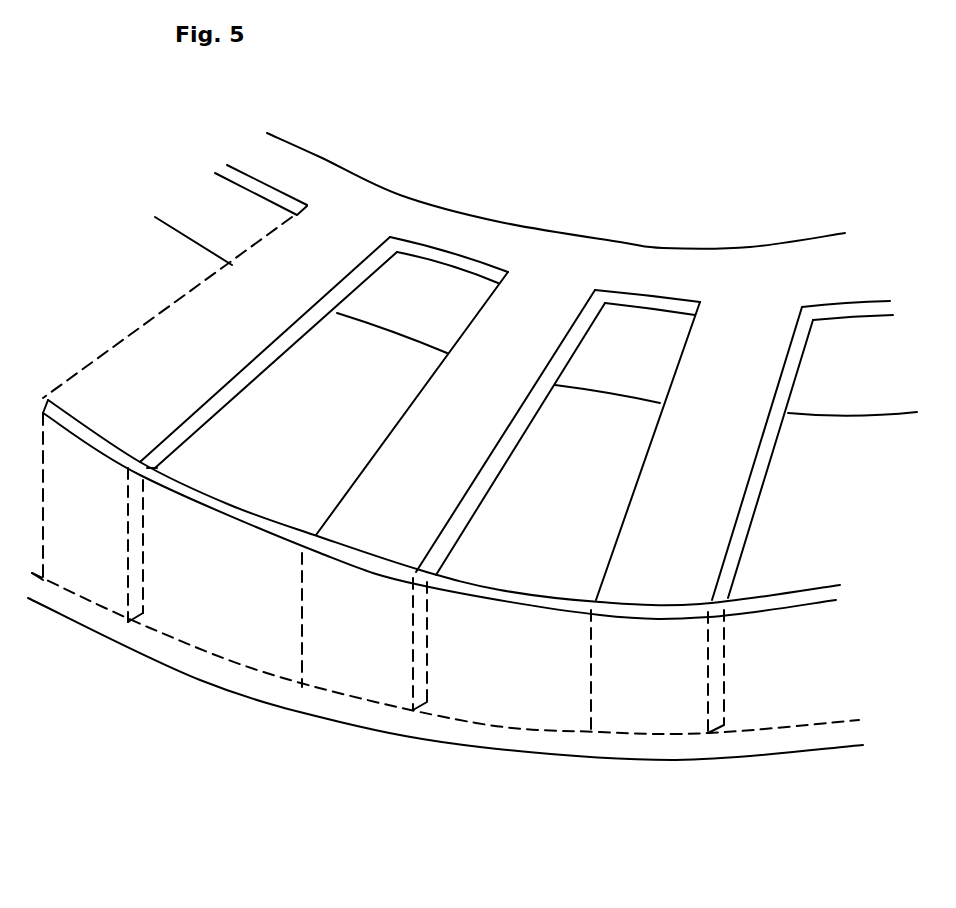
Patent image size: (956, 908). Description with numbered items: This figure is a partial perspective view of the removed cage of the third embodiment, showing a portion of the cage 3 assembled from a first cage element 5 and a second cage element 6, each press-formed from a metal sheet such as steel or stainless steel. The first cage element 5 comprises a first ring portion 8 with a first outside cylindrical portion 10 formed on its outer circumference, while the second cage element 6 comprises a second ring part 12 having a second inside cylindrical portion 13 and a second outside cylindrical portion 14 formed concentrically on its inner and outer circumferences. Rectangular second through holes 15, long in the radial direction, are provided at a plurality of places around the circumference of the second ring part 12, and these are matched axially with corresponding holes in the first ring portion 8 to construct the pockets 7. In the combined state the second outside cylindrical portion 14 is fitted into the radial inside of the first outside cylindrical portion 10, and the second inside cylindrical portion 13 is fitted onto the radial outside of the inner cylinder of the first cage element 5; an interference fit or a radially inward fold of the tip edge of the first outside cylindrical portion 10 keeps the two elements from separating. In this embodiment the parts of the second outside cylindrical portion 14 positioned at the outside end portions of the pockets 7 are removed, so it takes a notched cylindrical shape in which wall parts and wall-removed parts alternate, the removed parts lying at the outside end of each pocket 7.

The core body 3 is at (775, 237).
The first cage element 5 is at (609, 747).
The second cage element 6 is at (505, 328).
The pocket 7 is at (263, 358).
The first ring portion 8 is at (462, 680).
The first outside cylindrical portion 10 is at (511, 663).
The second ring part 12 is at (425, 463).
The second inside cylindrical portion 13 is at (620, 345).
The second outside cylindrical portion 14 is at (343, 630).
The second through hole 15 is at (418, 255).